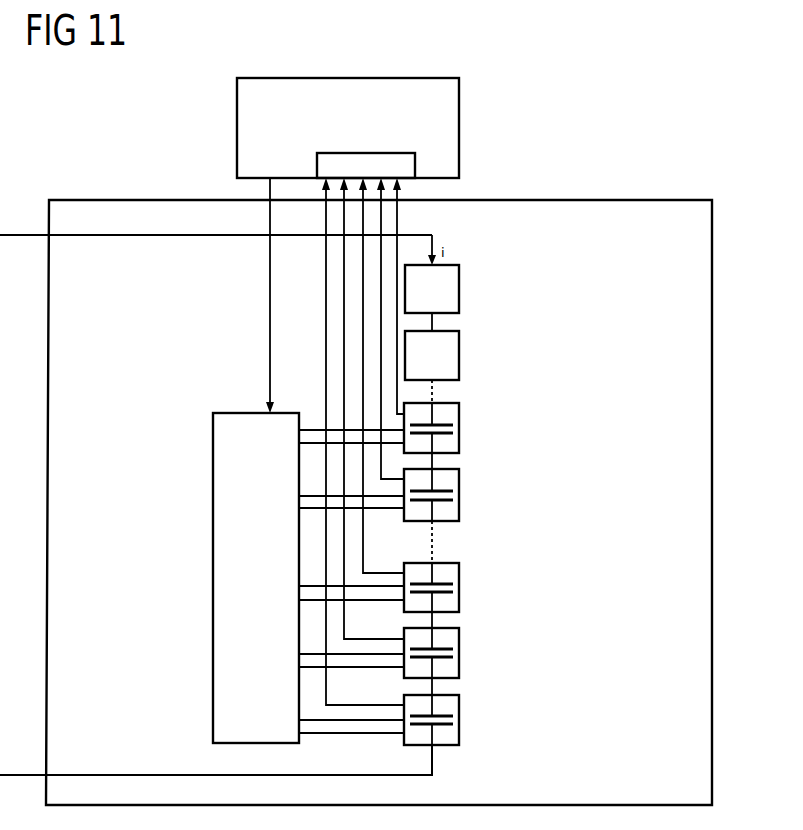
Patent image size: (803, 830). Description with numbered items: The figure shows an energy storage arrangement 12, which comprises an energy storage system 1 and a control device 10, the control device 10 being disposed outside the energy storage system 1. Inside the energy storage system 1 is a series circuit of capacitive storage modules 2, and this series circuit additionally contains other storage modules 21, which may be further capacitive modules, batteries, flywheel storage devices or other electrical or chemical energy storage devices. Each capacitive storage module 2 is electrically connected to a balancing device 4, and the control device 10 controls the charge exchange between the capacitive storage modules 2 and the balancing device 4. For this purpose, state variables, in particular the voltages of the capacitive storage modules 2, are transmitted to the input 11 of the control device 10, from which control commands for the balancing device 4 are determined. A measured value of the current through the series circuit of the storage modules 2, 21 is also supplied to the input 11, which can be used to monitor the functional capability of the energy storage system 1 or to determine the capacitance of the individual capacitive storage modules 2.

The energy storage system 1 is at (712, 271).
The capacitive storage module 2 is at (459, 425).
The balancing device 4 is at (213, 568).
The control device 10 is at (459, 100).
The input 11 is at (397, 165).
The energy storage arrangement 12 is at (697, 131).
The other storage module 21 is at (459, 288).